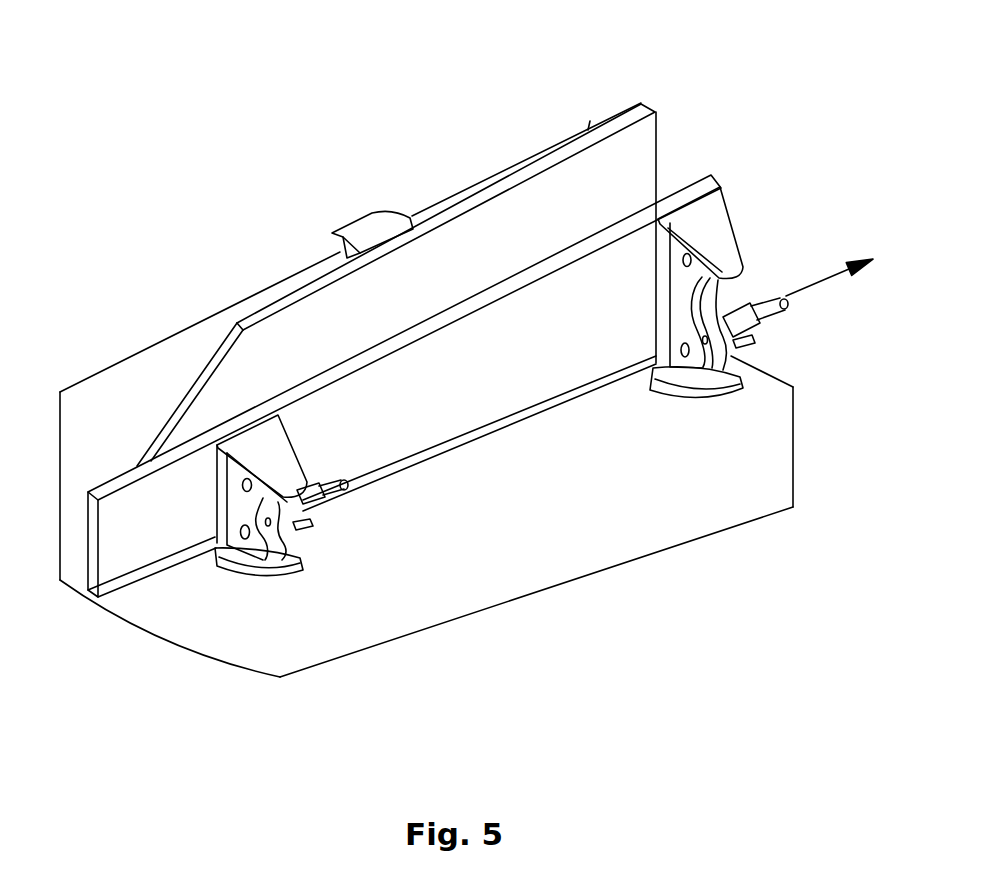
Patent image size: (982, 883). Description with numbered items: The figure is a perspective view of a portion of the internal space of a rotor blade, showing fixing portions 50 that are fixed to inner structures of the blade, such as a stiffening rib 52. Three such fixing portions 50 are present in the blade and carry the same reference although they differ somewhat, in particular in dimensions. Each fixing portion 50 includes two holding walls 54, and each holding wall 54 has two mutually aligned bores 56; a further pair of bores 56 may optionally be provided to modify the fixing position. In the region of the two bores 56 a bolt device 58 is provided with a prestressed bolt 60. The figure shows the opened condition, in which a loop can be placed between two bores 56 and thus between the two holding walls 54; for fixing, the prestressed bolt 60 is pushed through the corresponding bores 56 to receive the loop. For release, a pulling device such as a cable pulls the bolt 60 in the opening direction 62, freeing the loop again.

The fixing portion 50 is at (408, 190).
The stiffening rib 52 is at (660, 207).
The holding wall 54 is at (737, 388).
The bore 56 is at (243, 485).
The bolt device 58 is at (747, 312).
The prestressed bolt 60 is at (768, 316).
The opening direction 62 is at (808, 283).